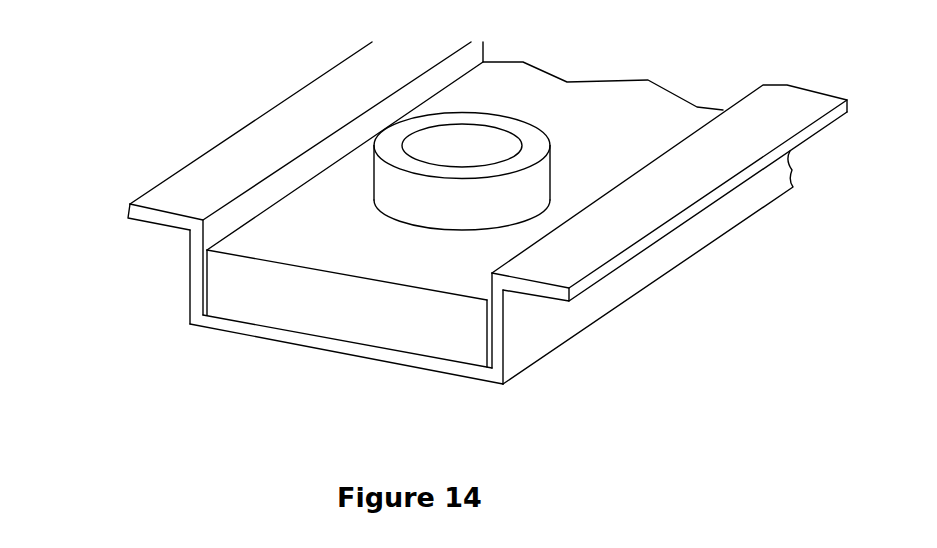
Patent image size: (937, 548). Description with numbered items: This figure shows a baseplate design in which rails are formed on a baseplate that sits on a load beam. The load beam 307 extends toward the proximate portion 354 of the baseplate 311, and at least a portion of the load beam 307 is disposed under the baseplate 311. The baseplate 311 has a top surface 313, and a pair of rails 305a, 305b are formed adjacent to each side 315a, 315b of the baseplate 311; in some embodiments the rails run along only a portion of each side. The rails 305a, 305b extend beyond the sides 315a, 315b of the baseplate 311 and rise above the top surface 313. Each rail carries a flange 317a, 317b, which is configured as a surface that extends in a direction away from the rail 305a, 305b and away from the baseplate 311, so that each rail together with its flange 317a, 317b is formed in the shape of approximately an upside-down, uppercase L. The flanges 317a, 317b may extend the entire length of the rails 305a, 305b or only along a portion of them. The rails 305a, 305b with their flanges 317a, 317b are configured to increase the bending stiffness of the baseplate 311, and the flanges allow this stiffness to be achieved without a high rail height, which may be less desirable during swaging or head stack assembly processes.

The rail 305a is at (190, 268).
The rail 305b is at (552, 320).
The load beam 307 is at (450, 377).
The baseplate 311 is at (348, 325).
The top surface 313 is at (340, 200).
The side 315a is at (205, 288).
The side 315b is at (488, 338).
The flange 317a is at (282, 102).
The flange 317b is at (650, 236).
The proximate portion 354 is at (257, 305).